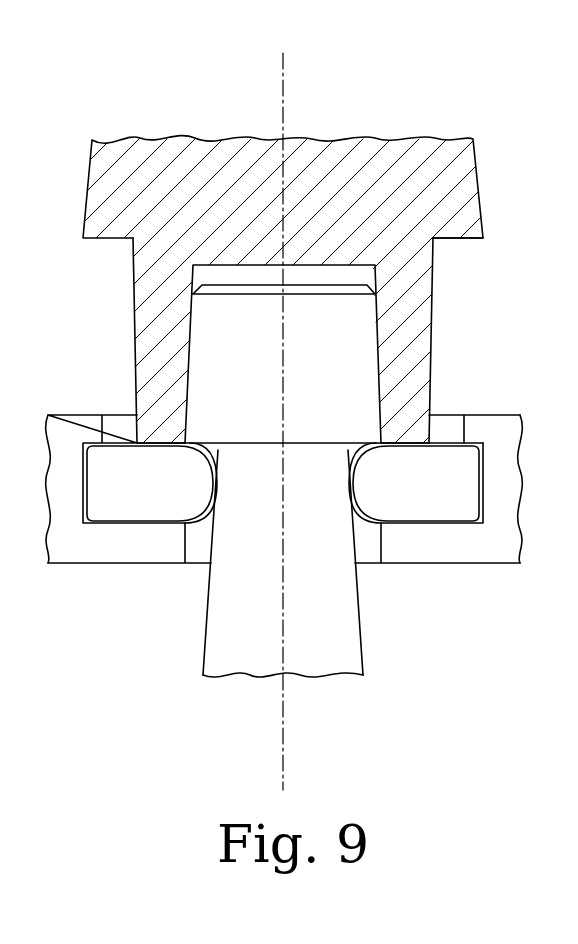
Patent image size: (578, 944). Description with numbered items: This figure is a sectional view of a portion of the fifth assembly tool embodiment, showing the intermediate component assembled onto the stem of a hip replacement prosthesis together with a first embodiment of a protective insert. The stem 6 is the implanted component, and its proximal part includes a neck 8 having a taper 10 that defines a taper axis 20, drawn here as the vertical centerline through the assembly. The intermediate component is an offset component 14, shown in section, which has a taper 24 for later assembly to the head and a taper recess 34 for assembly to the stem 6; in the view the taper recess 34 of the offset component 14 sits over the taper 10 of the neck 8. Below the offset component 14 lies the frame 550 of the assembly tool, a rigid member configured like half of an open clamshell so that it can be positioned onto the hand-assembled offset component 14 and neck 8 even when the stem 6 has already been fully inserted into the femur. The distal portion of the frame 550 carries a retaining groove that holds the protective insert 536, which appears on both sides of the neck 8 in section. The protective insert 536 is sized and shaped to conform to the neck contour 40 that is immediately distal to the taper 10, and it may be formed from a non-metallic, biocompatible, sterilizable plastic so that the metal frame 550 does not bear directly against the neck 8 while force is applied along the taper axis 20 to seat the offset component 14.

The taper axis 20 is at (283, 88).
The offset component 14 is at (470, 175).
The taper 24 is at (478, 222).
The taper recess 34 is at (380, 325).
The taper 10 is at (380, 378).
The frame 550 is at (117, 553).
The neck contour 40 is at (216, 463).
The protective insert 536 is at (129, 498).
The neck 8 is at (350, 597).
The stem 6 is at (357, 645).